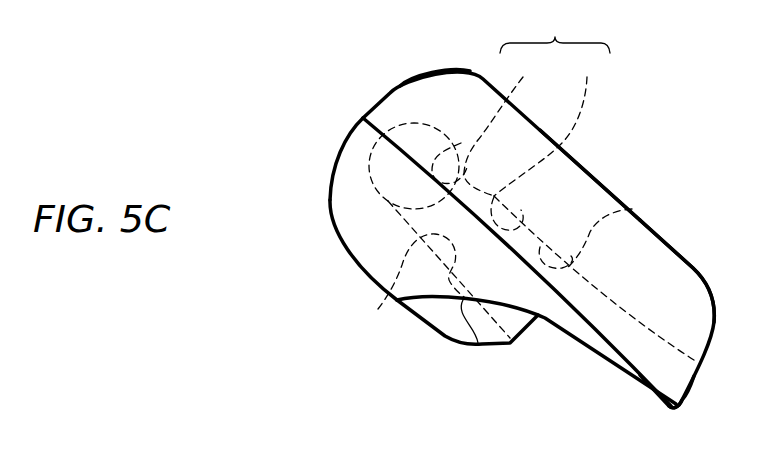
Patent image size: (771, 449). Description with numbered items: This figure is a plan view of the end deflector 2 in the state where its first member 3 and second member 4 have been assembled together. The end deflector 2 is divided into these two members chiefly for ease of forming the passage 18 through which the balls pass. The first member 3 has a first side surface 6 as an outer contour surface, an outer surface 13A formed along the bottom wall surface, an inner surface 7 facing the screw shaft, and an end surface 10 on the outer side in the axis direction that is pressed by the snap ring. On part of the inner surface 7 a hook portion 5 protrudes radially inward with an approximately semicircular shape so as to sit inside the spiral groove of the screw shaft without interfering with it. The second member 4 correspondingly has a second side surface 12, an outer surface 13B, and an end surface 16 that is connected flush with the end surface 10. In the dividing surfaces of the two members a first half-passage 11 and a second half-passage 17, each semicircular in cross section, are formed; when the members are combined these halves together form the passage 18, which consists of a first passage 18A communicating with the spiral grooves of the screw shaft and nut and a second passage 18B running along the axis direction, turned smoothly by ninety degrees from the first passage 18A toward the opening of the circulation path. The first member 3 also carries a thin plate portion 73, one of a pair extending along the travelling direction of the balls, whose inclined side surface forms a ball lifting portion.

The end deflector 2 is at (296, 187).
The first member 3 is at (364, 275).
The second member 4 is at (610, 139).
The hook portion 5 is at (454, 341).
The first side surface 6 is at (343, 247).
The inner surface 7 is at (478, 346).
The end surface 10 is at (361, 143).
The first half-passage 11 is at (428, 269).
The second side surface 12 is at (676, 249).
The outer surface 13A is at (333, 176).
The outer surface 13B is at (438, 72).
The end surface 16 is at (570, 199).
The second half-passage 17 is at (633, 209).
The passage 18 is at (555, 31).
The first passage 18A is at (553, 159).
The second passage 18B is at (564, 206).
The thin plate portion 73 is at (655, 389).